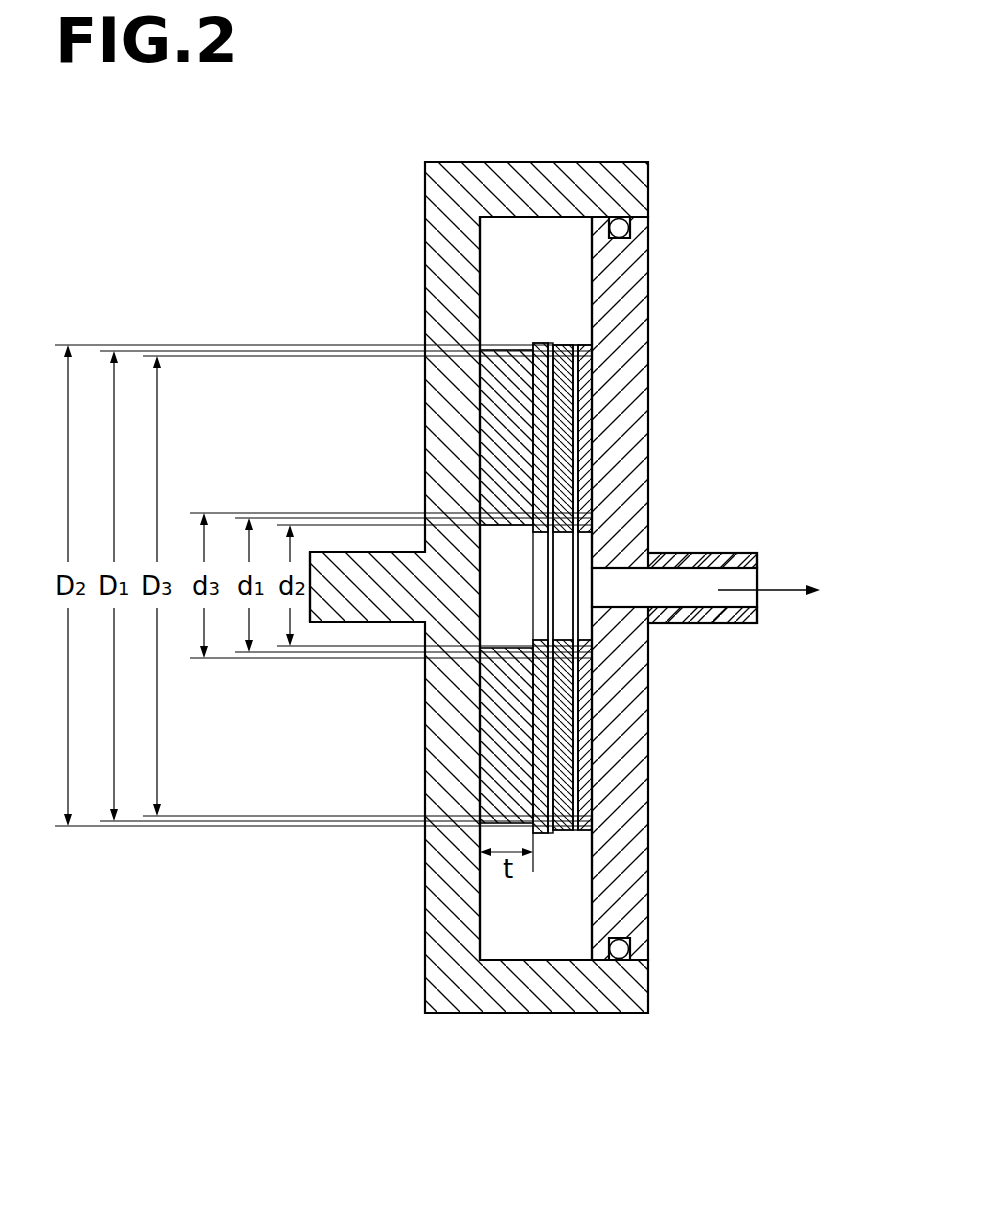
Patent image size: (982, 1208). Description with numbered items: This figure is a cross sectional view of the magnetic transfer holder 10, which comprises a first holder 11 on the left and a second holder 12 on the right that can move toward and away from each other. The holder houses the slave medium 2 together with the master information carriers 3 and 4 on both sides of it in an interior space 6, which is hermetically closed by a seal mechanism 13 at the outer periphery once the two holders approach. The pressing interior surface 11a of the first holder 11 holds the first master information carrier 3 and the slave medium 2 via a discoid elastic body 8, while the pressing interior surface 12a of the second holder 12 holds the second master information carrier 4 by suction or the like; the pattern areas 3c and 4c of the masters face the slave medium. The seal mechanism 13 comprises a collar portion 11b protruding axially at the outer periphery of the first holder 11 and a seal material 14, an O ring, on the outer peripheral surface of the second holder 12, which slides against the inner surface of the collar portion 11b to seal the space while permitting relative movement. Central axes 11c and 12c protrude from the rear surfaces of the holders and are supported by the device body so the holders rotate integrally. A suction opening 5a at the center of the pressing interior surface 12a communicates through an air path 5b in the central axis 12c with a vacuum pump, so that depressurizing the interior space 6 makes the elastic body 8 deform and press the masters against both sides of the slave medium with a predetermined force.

The magnetic transfer holder 10 is at (414, 104).
The first holder 11 is at (422, 309).
The pressing interior surface 11a is at (482, 903).
The collar portion 11b is at (550, 168).
The central axis 11c is at (345, 620).
The second holder 12 is at (654, 339).
The pressing interior surface 12a is at (590, 880).
The central axis 12c is at (726, 556).
The seal mechanism 13 is at (624, 207).
The seal material 14 is at (632, 229).
The slave medium 2 is at (563, 345).
The master information carrier 3 is at (538, 343).
The pattern area 3c is at (549, 343).
The master information carrier 4 is at (586, 432).
The pattern area 4c is at (580, 394).
The suction opening 5a is at (657, 607).
The air path 5b is at (712, 612).
The interior space 6 is at (492, 243).
The elastic body 8 is at (492, 410).